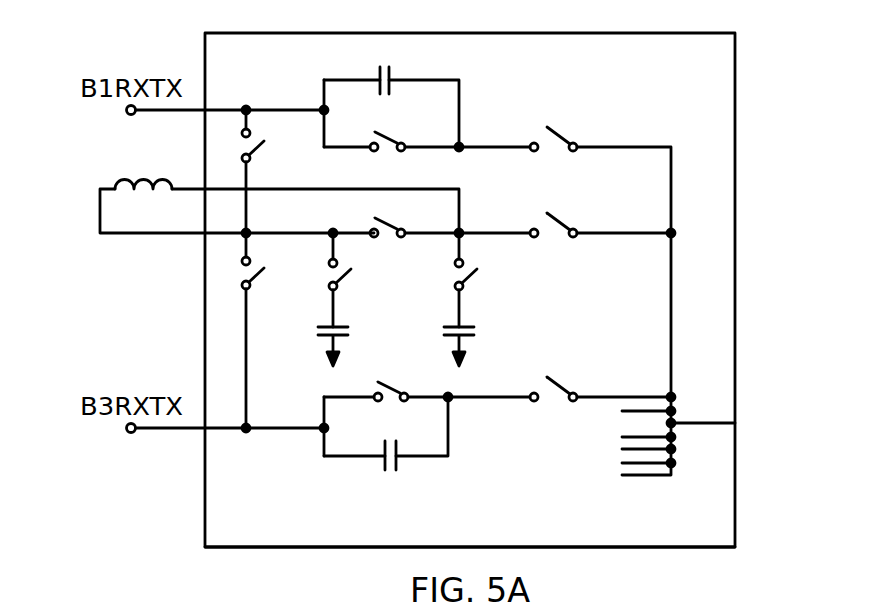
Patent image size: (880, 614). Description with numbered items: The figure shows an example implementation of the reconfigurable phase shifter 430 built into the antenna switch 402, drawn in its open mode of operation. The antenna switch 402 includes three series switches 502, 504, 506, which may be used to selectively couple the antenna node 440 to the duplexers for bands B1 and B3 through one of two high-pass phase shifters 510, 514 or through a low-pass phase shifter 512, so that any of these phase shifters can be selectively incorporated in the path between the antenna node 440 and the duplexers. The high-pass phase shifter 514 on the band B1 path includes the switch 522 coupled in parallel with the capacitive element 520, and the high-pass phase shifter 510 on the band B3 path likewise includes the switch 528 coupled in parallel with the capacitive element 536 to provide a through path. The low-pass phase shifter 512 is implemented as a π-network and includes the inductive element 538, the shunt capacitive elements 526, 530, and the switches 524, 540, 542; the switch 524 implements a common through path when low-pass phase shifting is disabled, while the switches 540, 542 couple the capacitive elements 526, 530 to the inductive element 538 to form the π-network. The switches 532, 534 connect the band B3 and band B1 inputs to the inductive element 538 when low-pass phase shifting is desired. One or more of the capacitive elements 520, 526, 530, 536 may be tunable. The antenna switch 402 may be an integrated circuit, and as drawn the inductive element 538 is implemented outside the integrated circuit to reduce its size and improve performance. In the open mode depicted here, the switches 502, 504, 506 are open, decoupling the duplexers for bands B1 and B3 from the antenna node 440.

The antenna switch 402 is at (668, 33).
The reconfigurable phase shifter 430 is at (316, 507).
The antenna node 440 is at (735, 425).
The switch 502 is at (550, 128).
The switch 504 is at (550, 216).
The switch 506 is at (550, 383).
The high-pass phase shifter 510 is at (304, 445).
The low-pass phase shifter 512 is at (62, 206).
The high-pass phase shifter 514 is at (312, 97).
The capacitive element 520 is at (392, 80).
The switch 522 is at (387, 137).
The switch 524 is at (393, 226).
The capacitive element 526 is at (444, 327).
The switch 528 is at (390, 387).
The capacitive element 530 is at (318, 327).
The switch 532 is at (257, 275).
The switch 534 is at (258, 148).
The capacitive element 536 is at (398, 466).
The inductive element 538 is at (145, 176).
The switch 540 is at (347, 278).
The switch 542 is at (473, 278).